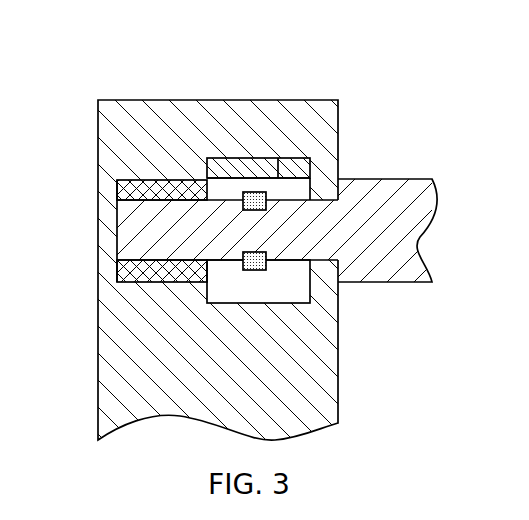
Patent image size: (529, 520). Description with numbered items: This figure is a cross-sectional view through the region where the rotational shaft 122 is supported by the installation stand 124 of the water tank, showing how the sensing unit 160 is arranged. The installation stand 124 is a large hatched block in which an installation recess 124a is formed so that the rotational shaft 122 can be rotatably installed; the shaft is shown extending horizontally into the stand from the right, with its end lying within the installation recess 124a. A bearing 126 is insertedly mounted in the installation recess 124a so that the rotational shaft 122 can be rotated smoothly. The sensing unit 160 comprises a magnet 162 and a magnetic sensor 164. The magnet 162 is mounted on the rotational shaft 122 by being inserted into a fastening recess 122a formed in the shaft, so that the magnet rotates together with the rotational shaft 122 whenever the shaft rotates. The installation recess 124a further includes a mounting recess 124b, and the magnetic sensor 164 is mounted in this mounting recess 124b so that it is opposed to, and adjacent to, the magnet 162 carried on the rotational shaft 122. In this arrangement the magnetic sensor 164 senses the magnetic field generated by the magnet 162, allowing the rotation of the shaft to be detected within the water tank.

The rotational shaft 122 is at (415, 234).
The fastening recess 122a is at (266, 206).
The installation stand 124 is at (308, 360).
The installation recess 124a is at (166, 275).
The mounting recess 124b is at (230, 295).
The bearing 126 is at (117, 183).
The sensing unit 160 is at (207, 44).
The magnet 162 is at (273, 178).
The magnetic sensor 164 is at (223, 173).